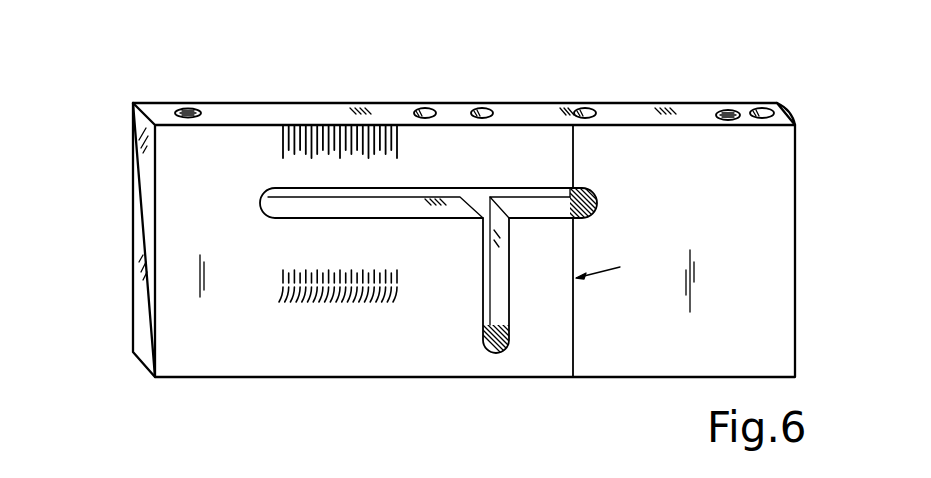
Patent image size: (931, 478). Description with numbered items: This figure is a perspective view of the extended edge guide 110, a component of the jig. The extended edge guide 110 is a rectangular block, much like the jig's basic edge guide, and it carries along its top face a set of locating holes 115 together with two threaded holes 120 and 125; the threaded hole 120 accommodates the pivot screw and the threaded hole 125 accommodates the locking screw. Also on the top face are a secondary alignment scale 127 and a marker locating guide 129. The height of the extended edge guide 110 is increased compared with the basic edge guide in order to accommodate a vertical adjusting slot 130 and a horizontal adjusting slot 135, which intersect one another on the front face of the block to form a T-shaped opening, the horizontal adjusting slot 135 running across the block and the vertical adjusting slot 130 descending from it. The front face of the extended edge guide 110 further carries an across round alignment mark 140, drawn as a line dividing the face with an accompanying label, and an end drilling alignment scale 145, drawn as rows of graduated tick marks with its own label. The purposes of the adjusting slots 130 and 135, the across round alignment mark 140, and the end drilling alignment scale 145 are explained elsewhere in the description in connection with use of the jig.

The extended edge guide 110 is at (133, 253).
The locating holes 115 is at (478, 112).
The threaded hole 120 is at (188, 108).
The threaded hole 125 is at (728, 110).
The secondary alignment scale 127 is at (567, 115).
The marker locating guide 129 is at (762, 110).
The vertical adjusting slot 130 is at (482, 320).
The horizontal adjusting slot 135 is at (422, 218).
The across round alignment mark 140 is at (573, 340).
The end drilling alignment scale 145 is at (313, 272).